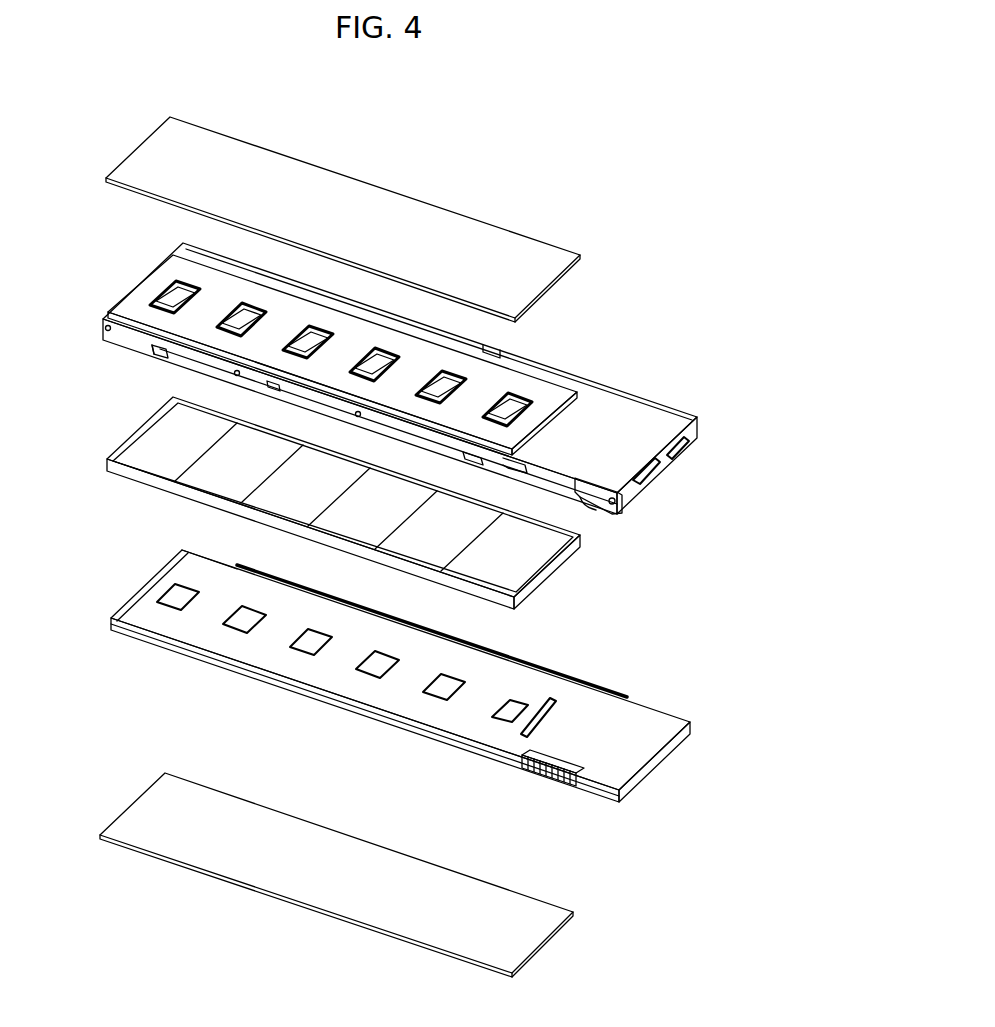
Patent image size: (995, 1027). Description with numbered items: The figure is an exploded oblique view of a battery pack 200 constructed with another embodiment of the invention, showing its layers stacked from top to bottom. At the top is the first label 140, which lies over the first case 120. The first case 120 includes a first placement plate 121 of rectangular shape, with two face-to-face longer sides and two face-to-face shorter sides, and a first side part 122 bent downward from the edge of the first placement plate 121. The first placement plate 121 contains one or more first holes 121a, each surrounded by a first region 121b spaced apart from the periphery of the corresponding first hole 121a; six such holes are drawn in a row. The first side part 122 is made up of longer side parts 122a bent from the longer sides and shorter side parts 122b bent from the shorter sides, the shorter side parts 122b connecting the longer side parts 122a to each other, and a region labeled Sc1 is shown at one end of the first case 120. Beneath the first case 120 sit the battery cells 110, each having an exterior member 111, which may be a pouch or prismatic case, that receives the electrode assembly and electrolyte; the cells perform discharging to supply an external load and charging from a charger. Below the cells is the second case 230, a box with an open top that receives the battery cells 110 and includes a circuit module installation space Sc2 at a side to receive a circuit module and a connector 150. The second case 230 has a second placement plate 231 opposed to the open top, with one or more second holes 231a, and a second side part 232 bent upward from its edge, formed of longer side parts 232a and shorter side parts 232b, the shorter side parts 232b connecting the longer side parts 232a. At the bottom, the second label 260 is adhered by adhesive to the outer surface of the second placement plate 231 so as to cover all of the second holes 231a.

The battery pack 200 is at (685, 165).
The first label 140 is at (155, 160).
The first case 120 is at (97, 316).
The first placement plate 121 is at (130, 306).
The first hole 121a is at (165, 289).
The first region 121b is at (173, 297).
The first side part 122 is at (740, 497).
The longer side part 122a is at (400, 432).
The shorter side part 122b is at (660, 470).
The battery cell 110 is at (212, 465).
The exterior member 111 is at (147, 433).
The first space Sc1 is at (598, 422).
The second case 230 is at (100, 620).
The second placement plate 231 is at (278, 660).
The second hole 231a is at (230, 621).
The circuit module installation space Sc2 is at (588, 717).
The connector 150 is at (535, 777).
The second side part 232 is at (690, 848).
The longer side part 232a is at (597, 800).
The shorter side part 232b is at (648, 780).
The second label 260 is at (175, 810).